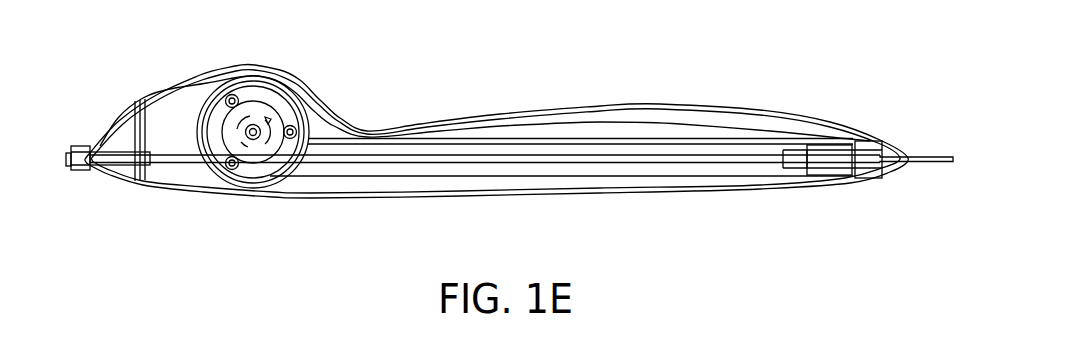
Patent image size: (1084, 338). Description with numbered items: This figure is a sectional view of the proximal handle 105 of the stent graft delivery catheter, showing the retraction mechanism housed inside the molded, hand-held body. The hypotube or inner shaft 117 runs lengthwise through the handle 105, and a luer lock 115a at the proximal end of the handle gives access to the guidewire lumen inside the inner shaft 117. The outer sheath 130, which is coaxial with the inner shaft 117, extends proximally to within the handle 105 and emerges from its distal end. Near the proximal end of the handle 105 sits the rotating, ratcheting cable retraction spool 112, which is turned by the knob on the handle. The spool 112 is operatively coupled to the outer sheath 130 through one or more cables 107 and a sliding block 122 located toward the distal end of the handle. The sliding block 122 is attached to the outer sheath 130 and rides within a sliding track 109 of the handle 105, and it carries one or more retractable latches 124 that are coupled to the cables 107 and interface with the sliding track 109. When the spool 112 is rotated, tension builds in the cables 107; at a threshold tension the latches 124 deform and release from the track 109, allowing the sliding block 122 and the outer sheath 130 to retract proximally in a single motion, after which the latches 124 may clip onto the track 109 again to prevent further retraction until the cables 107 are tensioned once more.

The proximal handle 105 is at (602, 105).
The sliding track 109 is at (707, 147).
The cable 107 is at (415, 138).
The cable retraction spool 112 is at (257, 163).
The inner shaft 117 is at (193, 167).
The luer lock 115a is at (77, 170).
The outer sheath 130 is at (927, 155).
The retractable latch 124 is at (795, 168).
The sliding block 122 is at (830, 175).